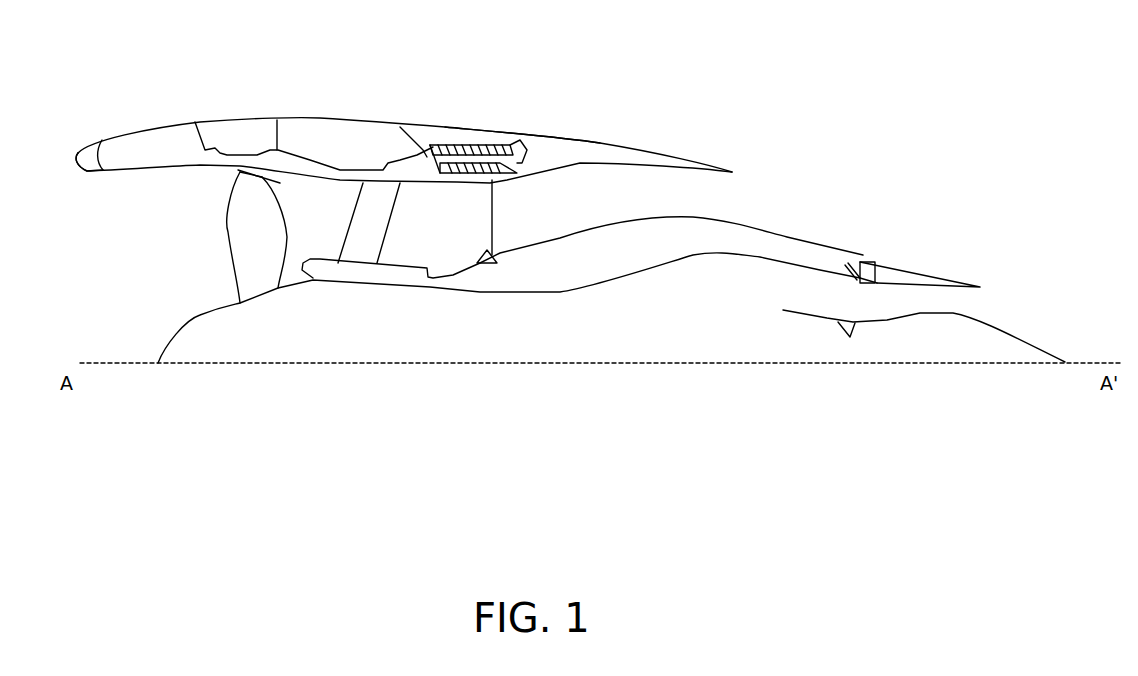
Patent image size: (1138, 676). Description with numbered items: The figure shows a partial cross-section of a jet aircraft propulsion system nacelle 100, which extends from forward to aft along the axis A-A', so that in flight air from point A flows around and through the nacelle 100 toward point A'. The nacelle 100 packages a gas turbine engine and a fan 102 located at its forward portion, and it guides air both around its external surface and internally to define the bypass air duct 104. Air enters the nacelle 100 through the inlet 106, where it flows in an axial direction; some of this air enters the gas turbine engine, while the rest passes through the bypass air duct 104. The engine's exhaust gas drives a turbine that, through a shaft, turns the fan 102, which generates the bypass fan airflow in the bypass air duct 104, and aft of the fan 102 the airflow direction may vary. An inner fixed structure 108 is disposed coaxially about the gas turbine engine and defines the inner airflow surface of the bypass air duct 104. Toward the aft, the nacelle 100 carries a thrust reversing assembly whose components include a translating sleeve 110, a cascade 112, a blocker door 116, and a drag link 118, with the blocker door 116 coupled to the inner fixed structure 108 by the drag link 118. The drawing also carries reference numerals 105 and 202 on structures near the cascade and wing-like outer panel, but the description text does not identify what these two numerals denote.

The nacelle 100 is at (68, 58).
The fan 102 is at (227, 237).
The bypass air duct 104 is at (588, 200).
The support strut 105 is at (408, 183).
The inlet 106 is at (83, 147).
The inner fixed structure 108 is at (787, 237).
The translating sleeve 110 is at (567, 137).
The cascade 112 is at (453, 147).
The blocker door 116 is at (455, 183).
The drag link 118 is at (493, 220).
The panel 202 is at (277, 120).